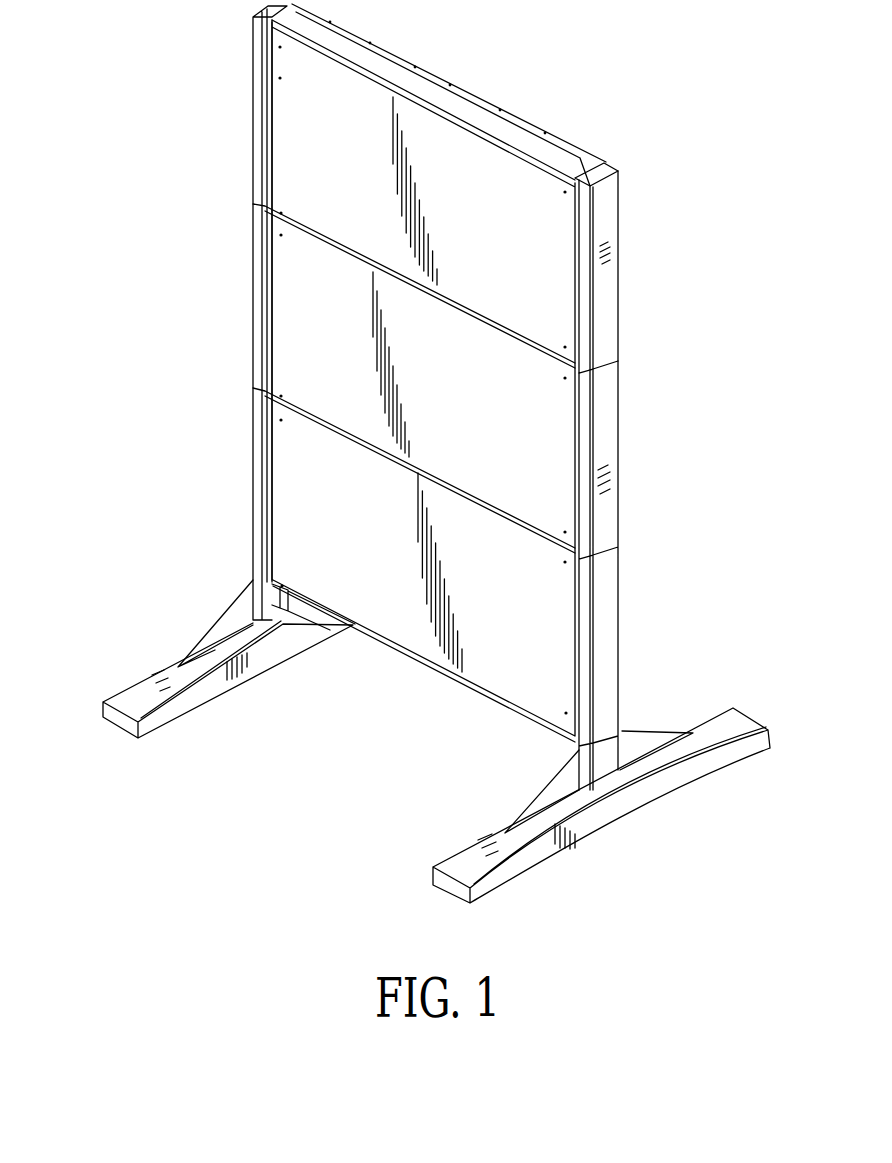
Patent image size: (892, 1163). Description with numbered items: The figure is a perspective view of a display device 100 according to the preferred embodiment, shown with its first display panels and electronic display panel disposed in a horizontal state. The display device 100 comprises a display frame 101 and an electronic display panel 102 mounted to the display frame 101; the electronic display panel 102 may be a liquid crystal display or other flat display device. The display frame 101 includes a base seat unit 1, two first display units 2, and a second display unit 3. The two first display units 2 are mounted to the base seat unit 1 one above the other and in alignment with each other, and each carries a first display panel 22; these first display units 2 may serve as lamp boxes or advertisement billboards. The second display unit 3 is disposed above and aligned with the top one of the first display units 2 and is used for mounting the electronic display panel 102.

The base seat unit 1 is at (110, 638).
The display device 100 is at (650, 108).
The display frame 101 is at (650, 456).
The electronic display panel 102 is at (287, 103).
The first display unit 2 is at (608, 412).
The second display unit 3 is at (608, 290).
The first display panel 22 is at (290, 308).